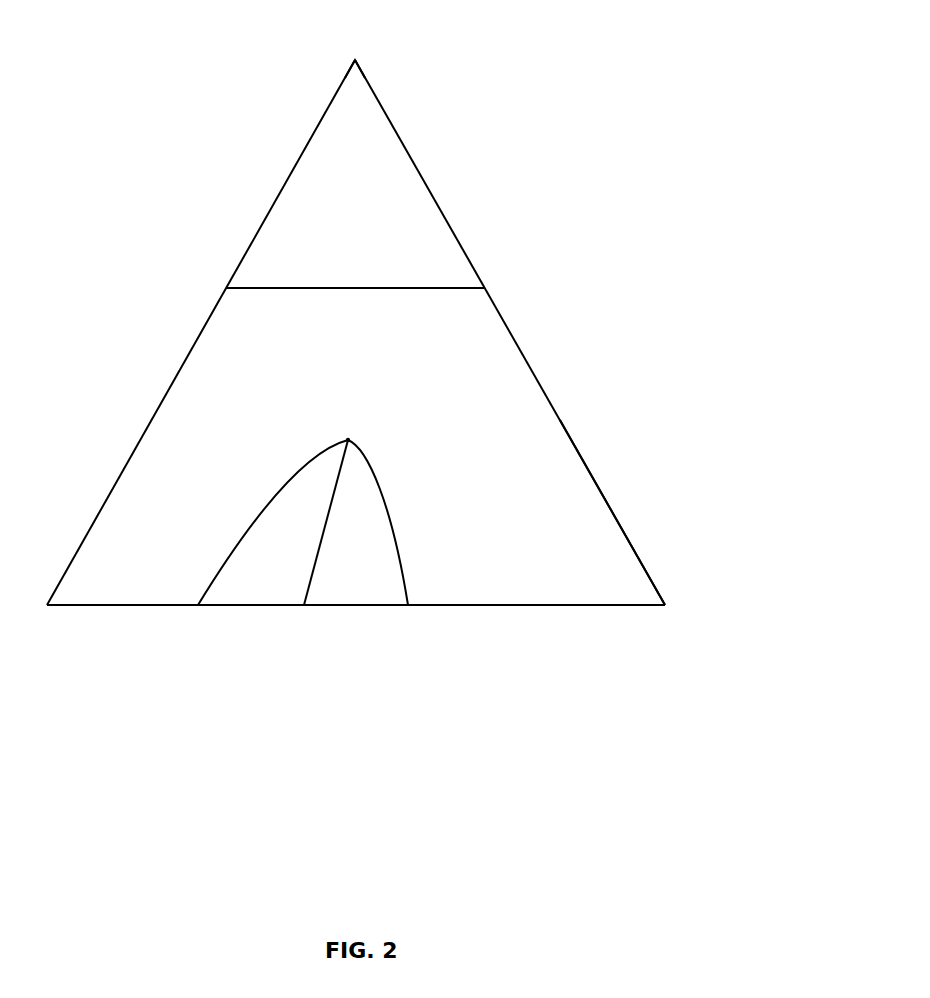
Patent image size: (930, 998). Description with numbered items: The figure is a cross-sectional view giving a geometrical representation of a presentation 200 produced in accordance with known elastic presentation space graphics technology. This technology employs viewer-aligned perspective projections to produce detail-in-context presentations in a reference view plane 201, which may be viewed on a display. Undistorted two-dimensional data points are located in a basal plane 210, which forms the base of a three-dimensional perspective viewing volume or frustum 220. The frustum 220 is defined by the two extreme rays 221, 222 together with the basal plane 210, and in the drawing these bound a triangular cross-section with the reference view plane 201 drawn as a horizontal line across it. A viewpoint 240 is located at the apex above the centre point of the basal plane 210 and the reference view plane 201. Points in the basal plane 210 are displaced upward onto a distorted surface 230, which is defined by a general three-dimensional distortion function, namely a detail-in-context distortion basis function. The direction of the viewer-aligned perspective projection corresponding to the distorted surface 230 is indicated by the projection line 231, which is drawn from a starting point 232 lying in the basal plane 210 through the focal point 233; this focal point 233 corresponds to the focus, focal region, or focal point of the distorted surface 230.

The presentation 200 is at (376, 341).
The reference view plane 201 is at (332, 290).
The basal plane 210 is at (498, 605).
The 3D perspective viewing volume or frustum 220 is at (588, 530).
The extreme ray 221 is at (555, 408).
The extreme ray 222 is at (155, 423).
The distorted surface 230 is at (392, 530).
The line FPo-FP 231 is at (318, 515).
The point FPo 232 is at (304, 606).
The point FP 233 is at (350, 438).
The viewpoint 240 is at (358, 58).